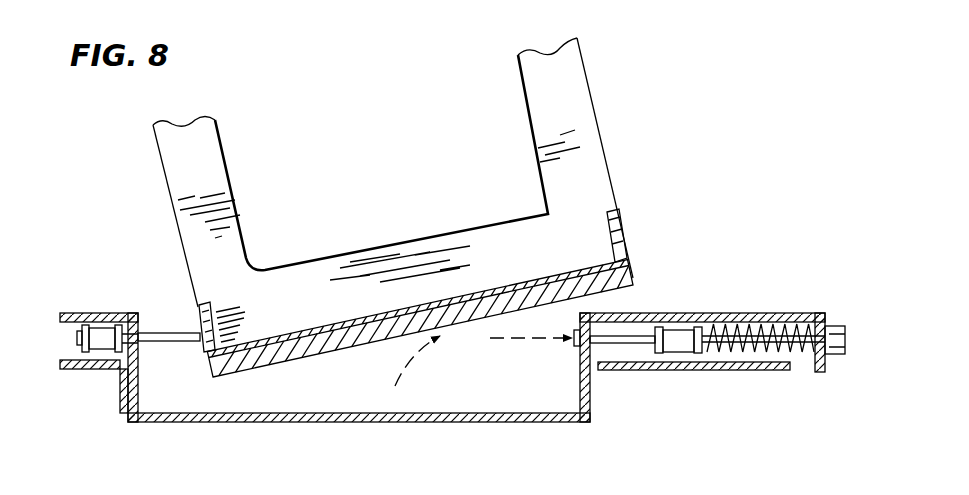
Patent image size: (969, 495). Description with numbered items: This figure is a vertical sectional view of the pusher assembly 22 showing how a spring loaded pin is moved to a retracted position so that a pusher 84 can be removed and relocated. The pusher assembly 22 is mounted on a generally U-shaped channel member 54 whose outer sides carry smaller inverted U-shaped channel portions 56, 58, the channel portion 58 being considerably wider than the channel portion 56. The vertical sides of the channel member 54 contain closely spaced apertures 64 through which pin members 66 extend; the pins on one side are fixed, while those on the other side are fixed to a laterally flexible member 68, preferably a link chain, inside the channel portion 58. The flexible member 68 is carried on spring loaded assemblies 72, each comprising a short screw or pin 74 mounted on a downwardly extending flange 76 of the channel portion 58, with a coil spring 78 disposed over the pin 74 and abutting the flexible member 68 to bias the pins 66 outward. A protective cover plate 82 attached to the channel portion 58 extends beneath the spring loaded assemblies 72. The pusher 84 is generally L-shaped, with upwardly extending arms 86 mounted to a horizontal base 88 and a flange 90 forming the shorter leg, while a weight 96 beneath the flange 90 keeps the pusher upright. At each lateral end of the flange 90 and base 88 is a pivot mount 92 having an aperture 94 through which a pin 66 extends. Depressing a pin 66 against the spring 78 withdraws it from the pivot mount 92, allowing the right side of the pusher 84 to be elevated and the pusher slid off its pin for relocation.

The pusher assembly 22 is at (440, 413).
The U-shaped channel member 54 is at (258, 423).
The inverted U-shaped channel portion 56 is at (120, 312).
The inverted U-shaped channel portion 58 is at (700, 318).
The aperture 64 is at (574, 346).
The pin member 66 is at (162, 345).
The flexible member 68 is at (105, 345).
The spring loaded assembly 72 is at (805, 372).
The screw or pin 74 is at (783, 330).
The downwardly extending flange 76 is at (832, 326).
The coil spring 78 is at (762, 353).
The protective cover plate 82 is at (695, 371).
The pusher 84 is at (590, 86).
The upwardly extending arm 86 is at (221, 158).
The base 88 is at (400, 258).
The flange 90 is at (496, 288).
The pivot mount 92 is at (197, 312).
The aperture 94 is at (205, 335).
The weight 96 is at (295, 356).